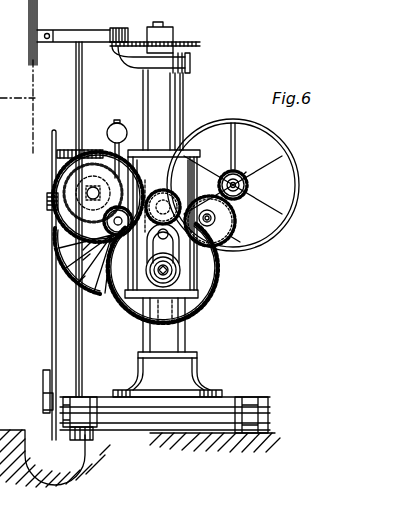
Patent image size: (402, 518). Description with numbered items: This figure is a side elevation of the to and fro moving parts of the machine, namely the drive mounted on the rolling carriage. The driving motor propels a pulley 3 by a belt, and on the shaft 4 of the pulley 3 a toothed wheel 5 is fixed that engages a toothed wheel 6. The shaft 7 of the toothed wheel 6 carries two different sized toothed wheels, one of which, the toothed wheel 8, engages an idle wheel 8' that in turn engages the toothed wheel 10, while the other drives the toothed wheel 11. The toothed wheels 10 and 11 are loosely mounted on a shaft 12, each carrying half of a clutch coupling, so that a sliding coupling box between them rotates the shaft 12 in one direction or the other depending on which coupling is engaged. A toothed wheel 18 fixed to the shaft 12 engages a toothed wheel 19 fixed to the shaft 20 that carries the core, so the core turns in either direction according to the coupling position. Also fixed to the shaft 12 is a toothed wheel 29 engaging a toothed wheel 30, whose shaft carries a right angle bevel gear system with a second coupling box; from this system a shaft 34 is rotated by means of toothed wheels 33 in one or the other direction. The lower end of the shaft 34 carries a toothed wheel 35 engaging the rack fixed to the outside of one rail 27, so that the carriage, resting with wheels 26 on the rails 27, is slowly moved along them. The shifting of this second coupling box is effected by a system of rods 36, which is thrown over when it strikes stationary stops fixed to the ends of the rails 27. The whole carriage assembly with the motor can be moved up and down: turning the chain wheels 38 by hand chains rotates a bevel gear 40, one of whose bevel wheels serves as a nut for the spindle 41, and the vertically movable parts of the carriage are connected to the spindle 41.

The pulley 3 is at (285, 152).
The shaft 4 is at (244, 175).
The toothed wheel 5 is at (248, 185).
The toothed wheel 6 is at (215, 222).
The shaft 7 is at (243, 250).
The toothed wheel 8 is at (213, 241).
The idle wheel 8' is at (163, 193).
The toothed wheel 10 is at (83, 250).
The toothed wheel 11 is at (83, 260).
The shaft 12 is at (100, 221).
The toothed wheel 18 is at (78, 283).
The toothed wheel 19 is at (198, 314).
The shaft 20 is at (193, 281).
The wheels 26 is at (86, 402).
The rails 27 is at (210, 441).
The toothed wheel 29 is at (99, 297).
The toothed wheel 30 is at (52, 186).
The toothed wheels 33 is at (77, 152).
The shaft 34 is at (82, 88).
The toothed wheel 35 is at (70, 440).
The system of rods 36 is at (55, 265).
The chain wheels 38 is at (37, 13).
The bevel gear 40 is at (131, 38).
The spindle 41 is at (165, 24).